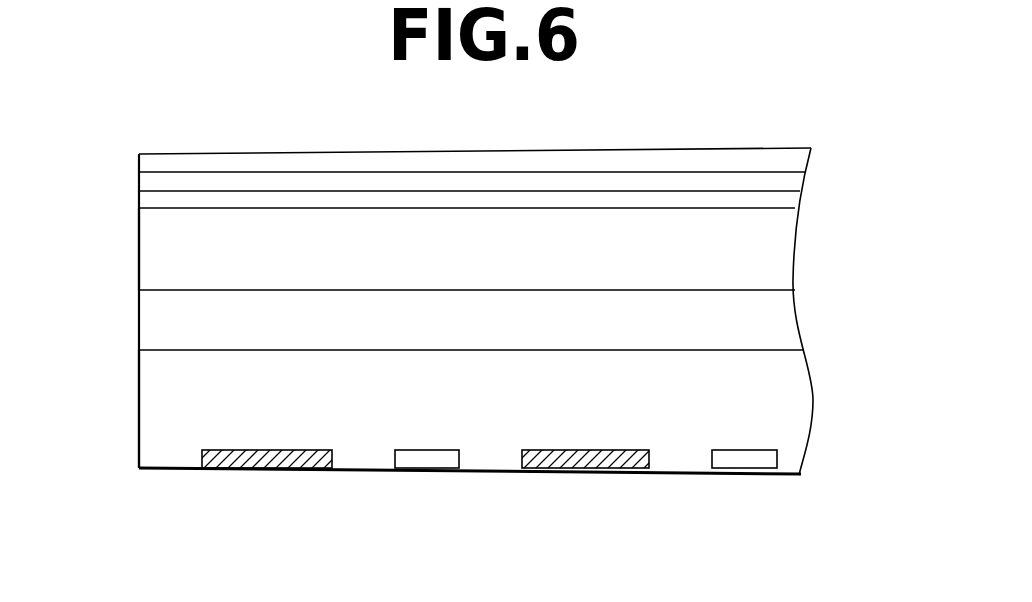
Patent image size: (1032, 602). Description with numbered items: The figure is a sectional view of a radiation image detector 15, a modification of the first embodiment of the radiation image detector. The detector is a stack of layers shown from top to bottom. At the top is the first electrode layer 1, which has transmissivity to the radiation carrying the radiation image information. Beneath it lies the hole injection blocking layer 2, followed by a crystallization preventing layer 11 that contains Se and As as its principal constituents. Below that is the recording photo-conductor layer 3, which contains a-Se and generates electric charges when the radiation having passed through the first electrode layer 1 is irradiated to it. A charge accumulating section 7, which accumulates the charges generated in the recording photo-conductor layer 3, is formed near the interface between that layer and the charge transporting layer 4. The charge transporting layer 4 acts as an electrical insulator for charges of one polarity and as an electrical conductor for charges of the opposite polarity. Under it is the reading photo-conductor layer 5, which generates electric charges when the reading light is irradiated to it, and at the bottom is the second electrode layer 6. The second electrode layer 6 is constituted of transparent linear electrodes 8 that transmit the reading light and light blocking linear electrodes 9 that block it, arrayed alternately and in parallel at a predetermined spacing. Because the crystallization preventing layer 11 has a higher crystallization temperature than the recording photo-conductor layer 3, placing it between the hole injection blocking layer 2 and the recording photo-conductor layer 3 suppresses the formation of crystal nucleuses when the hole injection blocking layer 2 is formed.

The radiation image detector 15 is at (803, 124).
The first electrode layer 1 is at (148, 163).
The hole injection blocking layer 2 is at (150, 184).
The crystallization preventing layer 11 is at (150, 198).
The recording photo-conductor layer 3 is at (152, 241).
The charge accumulating section 7 is at (173, 289).
The charge transporting layer 4 is at (152, 319).
The reading photo-conductor layer 5 is at (152, 373).
The second electrode layer 6 is at (427, 523).
The transparent linear electrode 8 is at (410, 460).
The light blocking linear electrode 9 is at (237, 470).